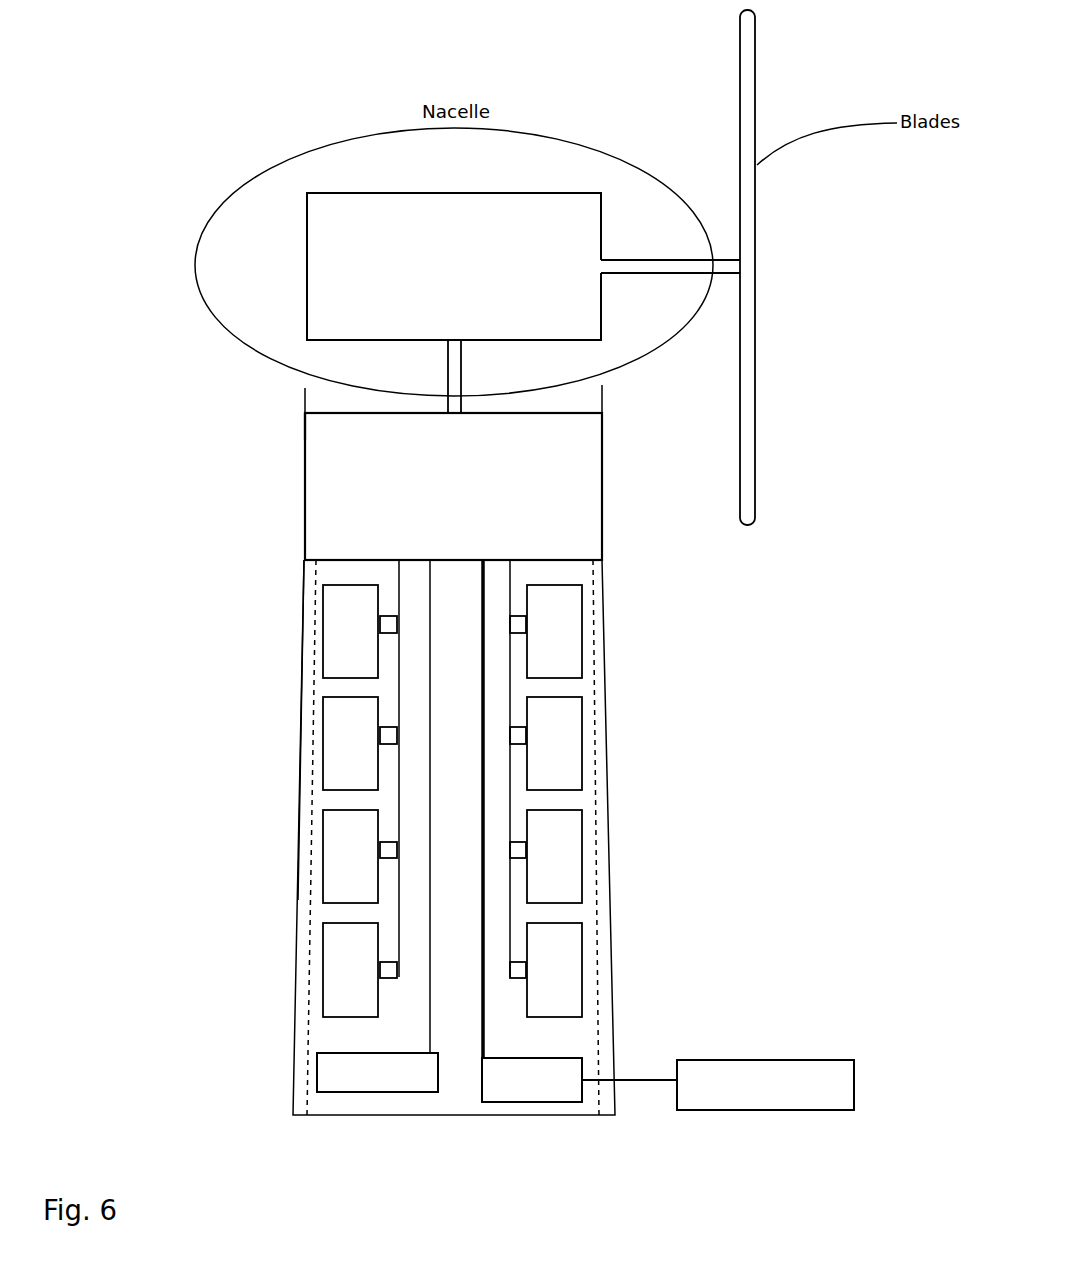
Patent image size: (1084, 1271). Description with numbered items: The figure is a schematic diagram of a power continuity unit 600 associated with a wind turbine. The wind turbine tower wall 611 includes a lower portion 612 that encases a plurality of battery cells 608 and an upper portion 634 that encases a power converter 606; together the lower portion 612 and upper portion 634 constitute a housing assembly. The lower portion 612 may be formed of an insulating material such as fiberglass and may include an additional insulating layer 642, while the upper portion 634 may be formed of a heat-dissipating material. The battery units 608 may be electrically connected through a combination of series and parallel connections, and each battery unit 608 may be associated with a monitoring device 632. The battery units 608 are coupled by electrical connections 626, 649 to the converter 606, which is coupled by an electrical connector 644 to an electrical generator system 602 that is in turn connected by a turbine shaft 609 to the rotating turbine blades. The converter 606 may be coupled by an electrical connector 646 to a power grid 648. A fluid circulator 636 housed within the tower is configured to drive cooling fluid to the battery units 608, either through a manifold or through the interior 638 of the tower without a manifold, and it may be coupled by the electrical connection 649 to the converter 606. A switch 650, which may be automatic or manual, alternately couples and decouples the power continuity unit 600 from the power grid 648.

The power continuity unit 600 is at (444, 837).
The electrical generator system 602 is at (377, 208).
The power converter 606 is at (367, 480).
The battery cells 608 is at (452, 801).
The turbine shaft 609 is at (687, 273).
The wind turbine tower wall 611 is at (612, 891).
The lower portion 612 is at (604, 619).
The electrical connections 626 is at (511, 572).
The monitoring device 632 is at (387, 622).
The upper portion 634 is at (305, 430).
The fluid circulator 636 is at (343, 1053).
The interior of the wind turbine tower 638 is at (451, 859).
The insulating layer 642 is at (305, 722).
The electrical connector 644 is at (453, 368).
The electrical connector 646 is at (485, 1022).
The power grid 648 is at (827, 1060).
The electrical connection 649 is at (430, 1027).
The switch 650 is at (582, 1058).